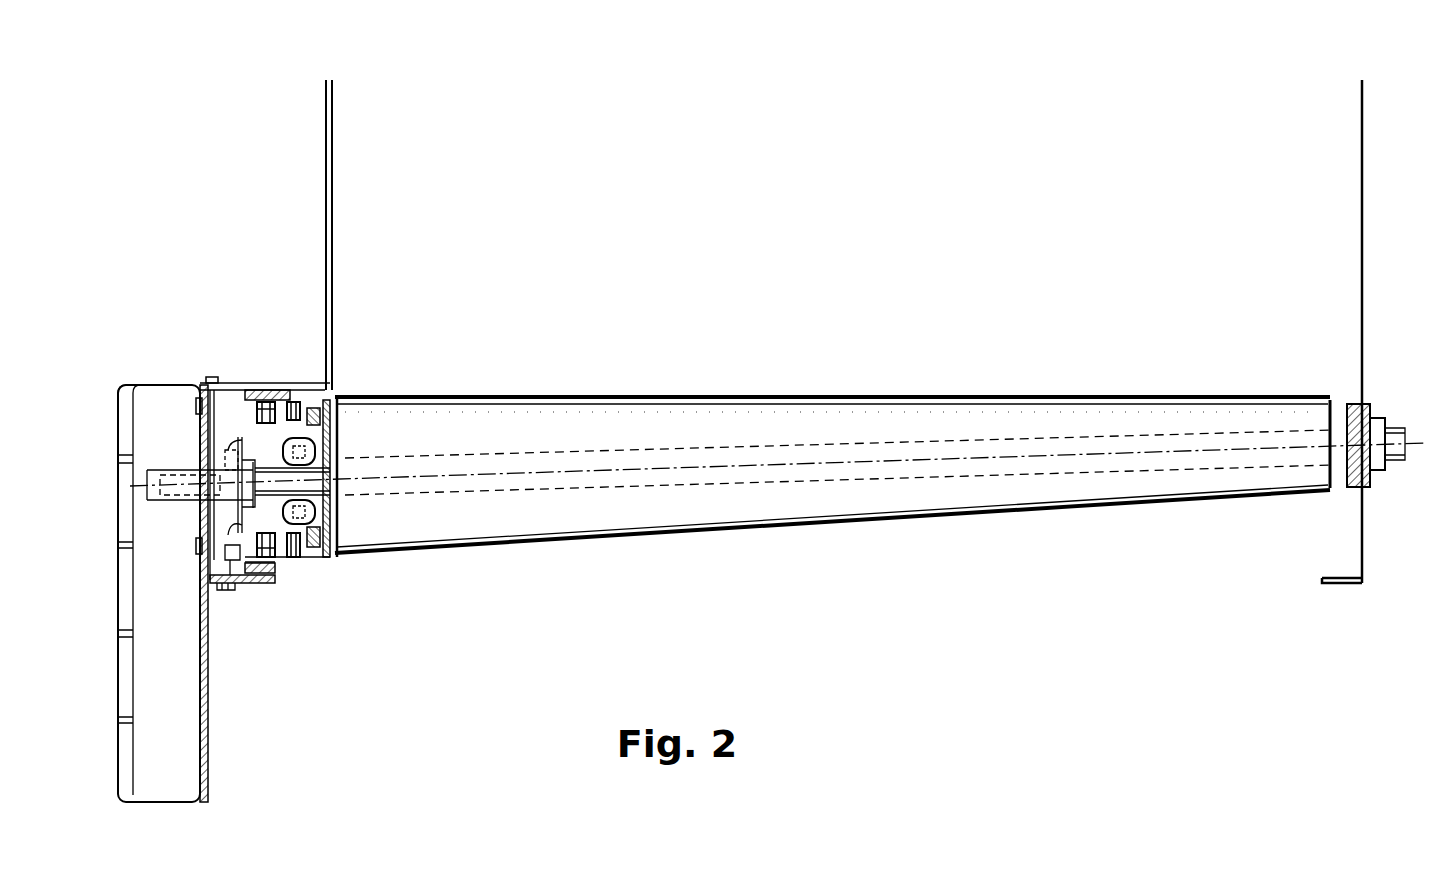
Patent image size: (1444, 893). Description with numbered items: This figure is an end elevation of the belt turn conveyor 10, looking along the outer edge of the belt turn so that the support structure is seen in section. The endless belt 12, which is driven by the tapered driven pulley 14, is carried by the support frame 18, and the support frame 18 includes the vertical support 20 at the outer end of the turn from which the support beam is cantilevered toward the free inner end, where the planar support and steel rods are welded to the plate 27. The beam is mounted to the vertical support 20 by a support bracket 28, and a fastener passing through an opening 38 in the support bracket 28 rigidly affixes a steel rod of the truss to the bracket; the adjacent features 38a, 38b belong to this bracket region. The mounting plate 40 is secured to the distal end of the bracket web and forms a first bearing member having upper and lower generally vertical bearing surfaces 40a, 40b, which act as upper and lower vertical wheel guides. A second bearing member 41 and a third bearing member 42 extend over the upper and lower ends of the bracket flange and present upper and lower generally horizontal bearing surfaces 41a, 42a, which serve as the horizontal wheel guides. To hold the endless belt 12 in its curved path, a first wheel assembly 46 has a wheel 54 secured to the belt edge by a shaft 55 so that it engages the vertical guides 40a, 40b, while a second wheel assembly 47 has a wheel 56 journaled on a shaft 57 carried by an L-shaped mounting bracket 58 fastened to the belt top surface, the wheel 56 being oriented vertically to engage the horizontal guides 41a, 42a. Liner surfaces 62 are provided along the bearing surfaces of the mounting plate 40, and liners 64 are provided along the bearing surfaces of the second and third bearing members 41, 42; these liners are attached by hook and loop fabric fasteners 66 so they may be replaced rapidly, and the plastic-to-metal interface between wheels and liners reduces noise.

The belt turn conveyor 10 is at (985, 393).
The endless belt 12 is at (770, 395).
The driven pulley 14 is at (613, 395).
The support frame 18 is at (108, 430).
The vertical support 20 is at (210, 710).
The plate 27 is at (1378, 412).
The support bracket 28 is at (335, 478).
The opening 38 is at (263, 455).
The hub flange 38a is at (247, 533).
The hub bosses 38b is at (207, 385).
The mounting plate 40 is at (340, 537).
The upper bearing surface 40a is at (337, 465).
The lower bearing surface 40b is at (335, 495).
The second bearing member 41 is at (293, 383).
The upper horizontal bearing surface 41a is at (330, 352).
The third bearing member 42 is at (262, 583).
The lower horizontal bearing surface 42a is at (283, 572).
The first wheel assembly 46 is at (337, 387).
The second wheel assembly 47 is at (213, 385).
The wheel 54 is at (277, 385).
The shaft 55 is at (297, 557).
The wheel 56 is at (240, 404).
The shaft 57 is at (225, 558).
The L-shaped mounting bracket 58 is at (263, 385).
The liner surface 62 is at (340, 430).
The liner 64 is at (243, 385).
The hook and loop fabric fastener 66 is at (246, 385).